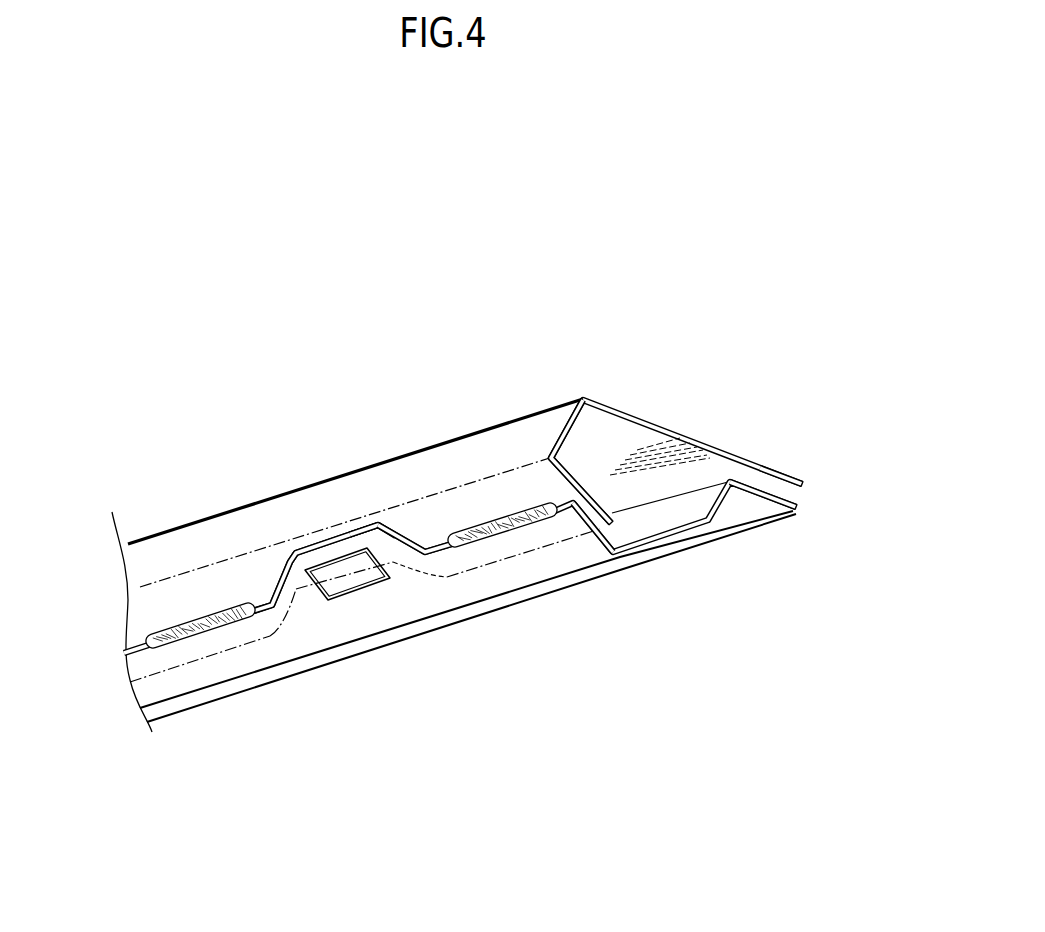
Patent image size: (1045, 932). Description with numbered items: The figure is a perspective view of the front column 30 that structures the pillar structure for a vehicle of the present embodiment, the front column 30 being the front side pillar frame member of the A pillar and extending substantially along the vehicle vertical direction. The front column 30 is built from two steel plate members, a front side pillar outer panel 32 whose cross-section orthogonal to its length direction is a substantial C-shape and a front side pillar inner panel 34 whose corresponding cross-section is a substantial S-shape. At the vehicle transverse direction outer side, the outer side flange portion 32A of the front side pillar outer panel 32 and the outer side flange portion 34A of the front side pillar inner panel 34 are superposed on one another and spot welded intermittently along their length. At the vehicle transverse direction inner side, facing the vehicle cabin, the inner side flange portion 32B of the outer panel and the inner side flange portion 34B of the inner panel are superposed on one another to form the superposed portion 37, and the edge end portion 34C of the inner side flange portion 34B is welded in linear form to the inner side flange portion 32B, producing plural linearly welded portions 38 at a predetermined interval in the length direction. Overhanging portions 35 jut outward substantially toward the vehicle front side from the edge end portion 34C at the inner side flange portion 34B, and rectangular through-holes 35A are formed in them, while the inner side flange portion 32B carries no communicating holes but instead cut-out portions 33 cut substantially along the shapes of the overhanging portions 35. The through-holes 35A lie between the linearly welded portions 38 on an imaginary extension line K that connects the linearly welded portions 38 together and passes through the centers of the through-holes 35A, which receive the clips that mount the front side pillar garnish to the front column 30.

The front column 30 is at (465, 341).
The front side pillar outer panel 32 is at (493, 428).
The outer side flange portion 32A is at (803, 482).
The inner side flange portion 32B is at (608, 505).
The cut-out portions 33 is at (293, 604).
The front side pillar inner panel 34 is at (483, 529).
The outer side flange portion 34A is at (789, 518).
The inner side flange portion 34B is at (560, 530).
The edge end portion 34C is at (432, 548).
The overhanging portions 35 is at (338, 534).
The through-holes 35A is at (336, 592).
The superposed portion 37 is at (457, 553).
The linearly welded portions 38 is at (217, 611).
The imaginary extension line K is at (377, 517).